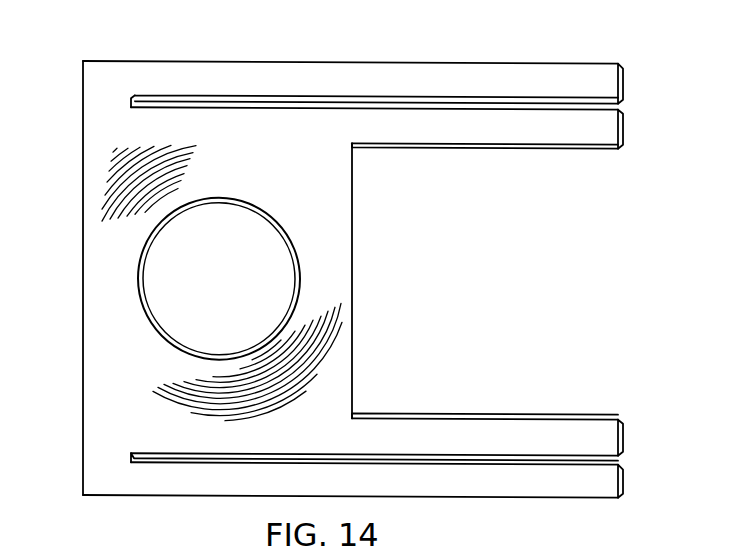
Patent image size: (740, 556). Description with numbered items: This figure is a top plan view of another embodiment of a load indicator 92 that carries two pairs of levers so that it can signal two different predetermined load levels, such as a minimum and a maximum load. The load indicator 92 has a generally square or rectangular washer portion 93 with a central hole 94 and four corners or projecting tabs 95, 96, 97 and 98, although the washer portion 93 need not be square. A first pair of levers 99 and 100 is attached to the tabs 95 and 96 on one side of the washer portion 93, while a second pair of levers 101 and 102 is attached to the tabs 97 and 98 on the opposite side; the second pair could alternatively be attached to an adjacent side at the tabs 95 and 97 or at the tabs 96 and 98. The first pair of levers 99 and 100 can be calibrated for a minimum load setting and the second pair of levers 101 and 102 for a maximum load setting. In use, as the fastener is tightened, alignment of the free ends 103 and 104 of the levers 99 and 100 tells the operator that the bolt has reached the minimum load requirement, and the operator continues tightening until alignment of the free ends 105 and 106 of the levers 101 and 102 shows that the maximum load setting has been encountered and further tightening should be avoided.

The load indicator 92 is at (374, 248).
The washer portion 93 is at (328, 300).
The central hole 94 is at (255, 228).
The tab 95 is at (333, 430).
The tab 96 is at (102, 441).
The tab 97 is at (335, 128).
The tab 98 is at (98, 114).
The lever 99 is at (482, 432).
The lever 100 is at (453, 485).
The lever 101 is at (482, 132).
The lever 102 is at (490, 80).
The free end 103 is at (622, 438).
The free end 104 is at (620, 488).
The free end 105 is at (623, 130).
The free end 106 is at (623, 82).